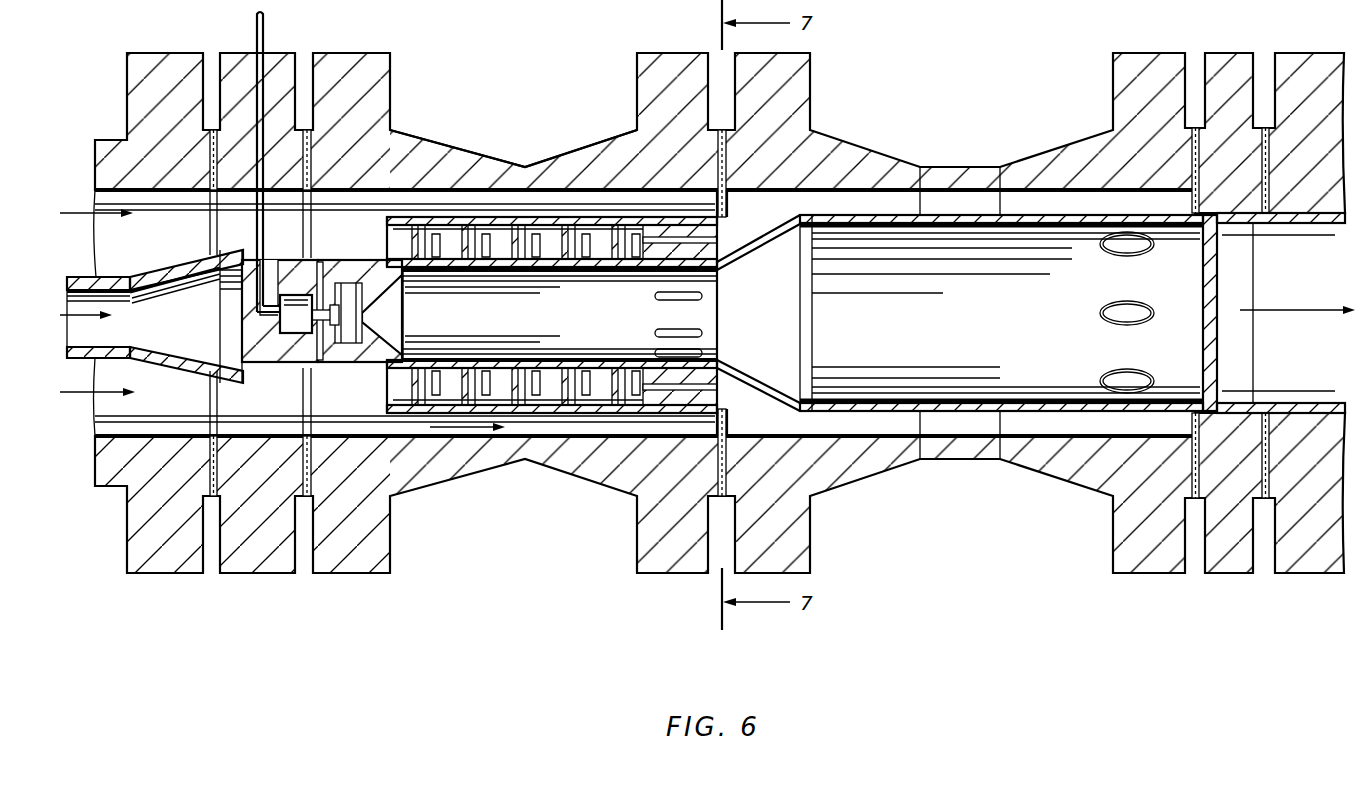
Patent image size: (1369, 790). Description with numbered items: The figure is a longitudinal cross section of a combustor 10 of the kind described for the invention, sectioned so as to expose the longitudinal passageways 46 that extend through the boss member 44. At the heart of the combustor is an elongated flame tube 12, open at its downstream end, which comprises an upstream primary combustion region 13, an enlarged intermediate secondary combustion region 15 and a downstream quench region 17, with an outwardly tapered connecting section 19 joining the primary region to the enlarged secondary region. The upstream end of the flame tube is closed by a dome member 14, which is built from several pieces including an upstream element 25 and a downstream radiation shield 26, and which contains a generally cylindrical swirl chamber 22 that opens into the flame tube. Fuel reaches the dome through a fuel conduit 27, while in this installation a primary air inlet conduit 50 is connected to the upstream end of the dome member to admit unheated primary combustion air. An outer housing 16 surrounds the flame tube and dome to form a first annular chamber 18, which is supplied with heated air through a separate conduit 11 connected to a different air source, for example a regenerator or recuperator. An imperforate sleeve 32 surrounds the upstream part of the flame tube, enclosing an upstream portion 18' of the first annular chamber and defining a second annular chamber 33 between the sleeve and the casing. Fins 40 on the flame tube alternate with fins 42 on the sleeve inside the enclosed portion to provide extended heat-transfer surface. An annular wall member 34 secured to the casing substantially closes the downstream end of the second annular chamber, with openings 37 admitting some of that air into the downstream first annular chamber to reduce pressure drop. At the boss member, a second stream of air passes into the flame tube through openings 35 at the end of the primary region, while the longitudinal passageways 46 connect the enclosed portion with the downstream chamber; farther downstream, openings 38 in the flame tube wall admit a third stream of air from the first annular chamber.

The combustor 10 is at (860, 132).
The conduit 11 is at (163, 438).
The flame tube 12 is at (605, 270).
The primary combustion region 13 is at (545, 324).
The dome member 14 is at (226, 316).
The secondary combustion region 15 is at (877, 320).
The outer housing 16 is at (582, 150).
The quench region 17 is at (1189, 316).
The first annular chamber 18 is at (535, 304).
The upstream portion of first annular chamber 18' is at (611, 358).
The connecting section 19 is at (760, 378).
The swirl chamber 22 is at (345, 340).
The upstream element 25 is at (296, 368).
The radiation shield 26 is at (358, 260).
The fuel conduit 27 is at (264, 29).
The imperforate sleeve 32 is at (412, 412).
The second annular chamber 33 is at (553, 418).
The annular wall member 34 is at (713, 430).
The opening 35 is at (690, 296).
The openings 37 is at (727, 200).
The opening 38 is at (1098, 312).
The fins 40 is at (458, 378).
The fins 42 is at (485, 378).
The boss member 44 is at (660, 400).
The longitudinal passageways 46 is at (665, 243).
The primary air inlet conduit 50 is at (117, 268).